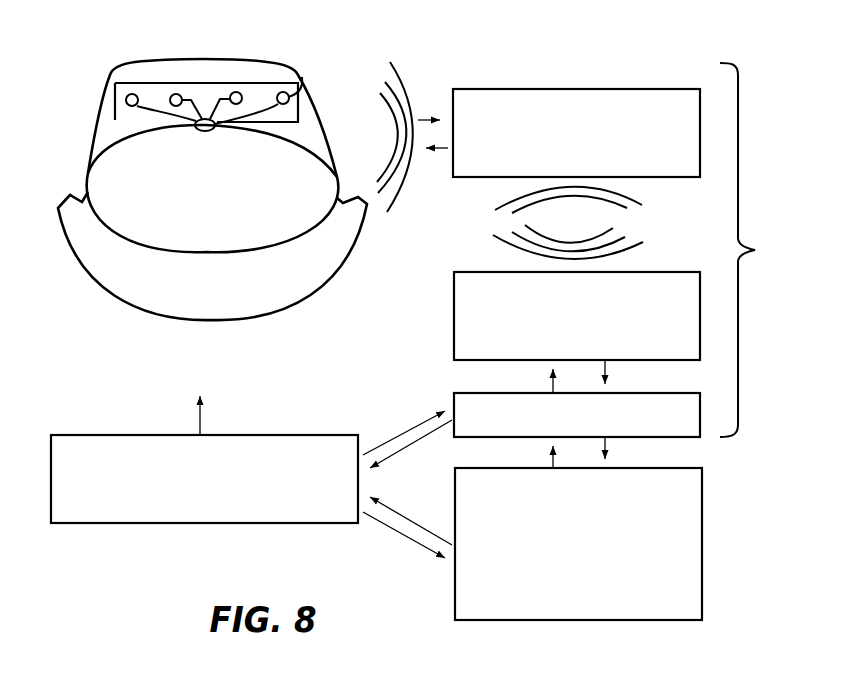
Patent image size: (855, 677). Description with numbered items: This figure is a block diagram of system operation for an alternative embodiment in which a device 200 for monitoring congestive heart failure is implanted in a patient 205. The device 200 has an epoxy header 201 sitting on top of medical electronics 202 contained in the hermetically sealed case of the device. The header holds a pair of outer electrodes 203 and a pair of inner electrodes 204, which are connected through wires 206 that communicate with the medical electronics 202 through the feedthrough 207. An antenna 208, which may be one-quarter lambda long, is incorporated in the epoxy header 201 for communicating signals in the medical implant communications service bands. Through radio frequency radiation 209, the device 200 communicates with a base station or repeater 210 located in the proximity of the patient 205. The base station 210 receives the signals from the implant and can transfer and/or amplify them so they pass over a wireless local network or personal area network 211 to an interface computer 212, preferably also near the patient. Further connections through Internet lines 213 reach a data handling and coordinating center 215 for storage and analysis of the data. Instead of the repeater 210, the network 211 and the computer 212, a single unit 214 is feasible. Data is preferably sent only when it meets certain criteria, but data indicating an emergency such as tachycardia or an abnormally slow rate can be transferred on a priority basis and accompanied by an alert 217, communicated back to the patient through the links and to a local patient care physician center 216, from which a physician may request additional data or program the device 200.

The device 200 is at (88, 172).
The epoxy header 201 is at (105, 120).
The medical electronics 202 is at (112, 211).
The outer electrodes 203 is at (127, 92).
The inner electrodes 204 is at (174, 93).
The patient 205 is at (85, 268).
The wires 206 is at (171, 116).
The feedthrough 207 is at (209, 132).
The antenna 208 is at (300, 95).
The radio frequency radiation 209 is at (403, 61).
The base station or repeater 210 is at (575, 88).
The wireless local network or personal area network 211 is at (655, 217).
The interface computer 212 is at (667, 271).
The Internet lines 213 is at (662, 392).
The single unit 214 is at (775, 250).
The data handling and coordinating center 215 is at (660, 467).
The local patient care physician center 216 is at (90, 524).
The alert 217 is at (98, 381).